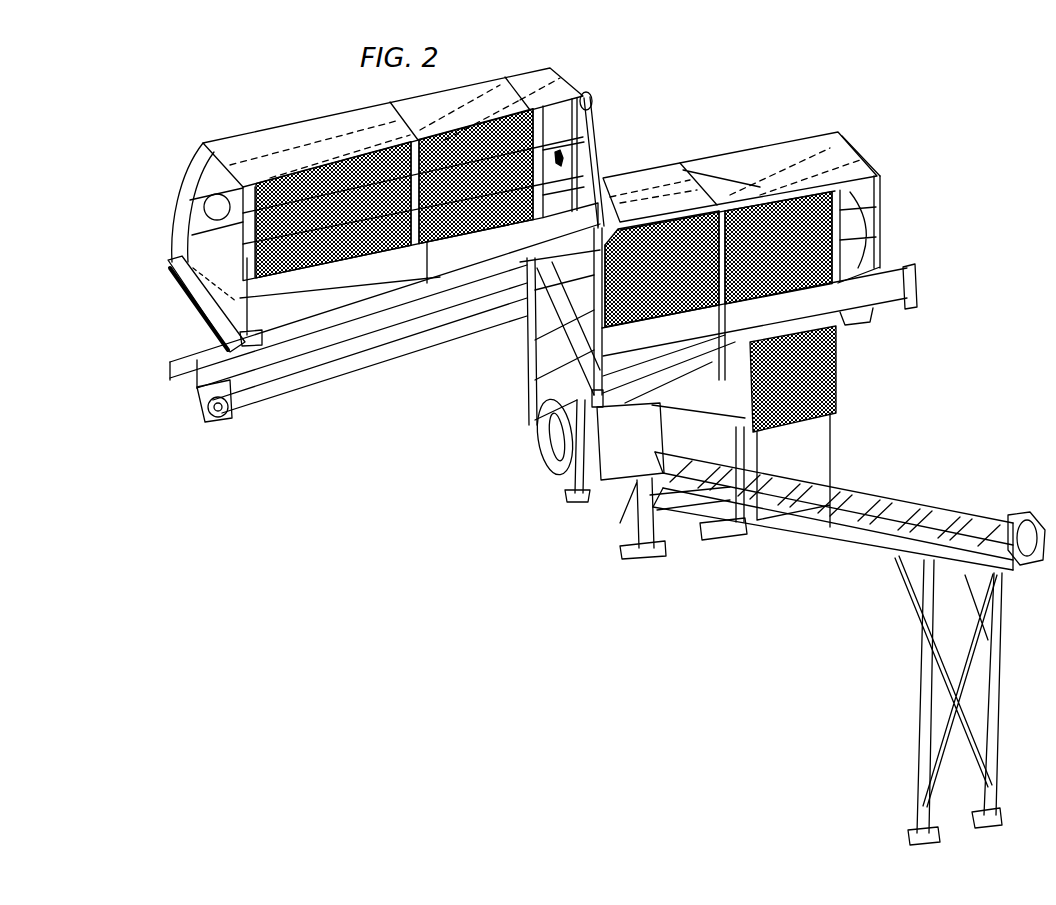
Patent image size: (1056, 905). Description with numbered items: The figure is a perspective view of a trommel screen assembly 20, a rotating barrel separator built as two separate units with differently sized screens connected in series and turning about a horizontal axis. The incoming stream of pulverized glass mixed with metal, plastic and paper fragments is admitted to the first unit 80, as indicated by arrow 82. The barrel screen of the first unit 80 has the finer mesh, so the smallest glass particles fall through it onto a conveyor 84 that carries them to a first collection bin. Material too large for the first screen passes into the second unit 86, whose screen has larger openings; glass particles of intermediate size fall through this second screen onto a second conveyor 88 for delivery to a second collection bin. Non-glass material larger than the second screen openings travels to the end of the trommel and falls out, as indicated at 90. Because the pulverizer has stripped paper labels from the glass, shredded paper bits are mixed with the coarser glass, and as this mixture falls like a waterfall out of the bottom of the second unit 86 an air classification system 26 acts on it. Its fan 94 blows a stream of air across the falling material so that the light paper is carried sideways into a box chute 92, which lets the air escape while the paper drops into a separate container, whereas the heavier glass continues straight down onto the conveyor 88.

The trommel screen separator 20 is at (325, 85).
The air classification system 26 is at (564, 506).
The first unit 80 is at (185, 222).
The arrow 82 is at (236, 222).
The conveyor 84 is at (334, 378).
The second unit 86 is at (880, 187).
The second conveyor 88 is at (942, 508).
The trommel end discharge 90 is at (900, 209).
The box chute 92 is at (832, 442).
The fan 94 is at (548, 434).